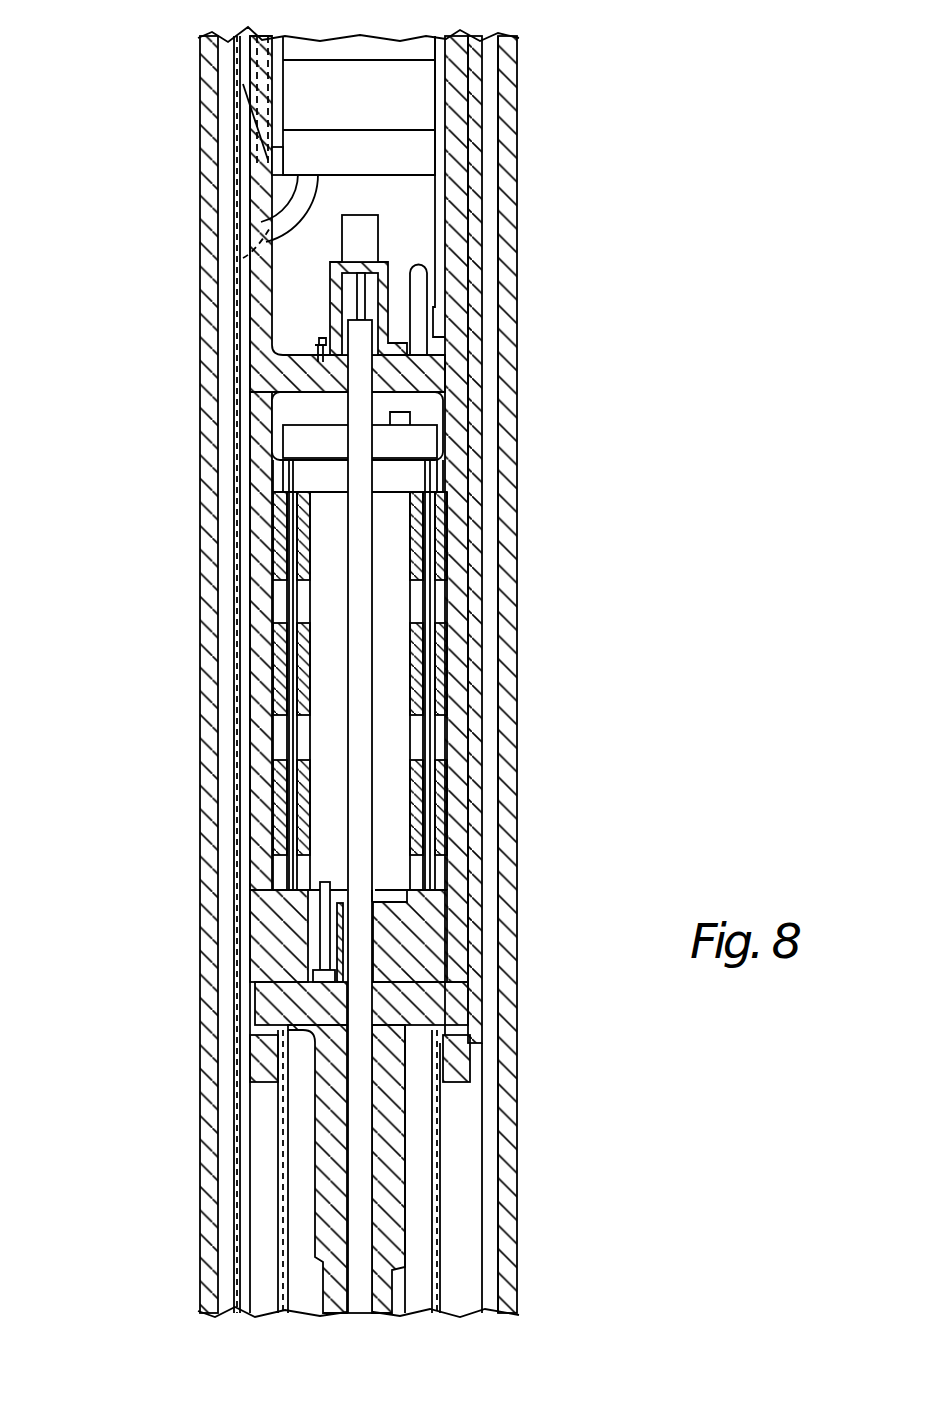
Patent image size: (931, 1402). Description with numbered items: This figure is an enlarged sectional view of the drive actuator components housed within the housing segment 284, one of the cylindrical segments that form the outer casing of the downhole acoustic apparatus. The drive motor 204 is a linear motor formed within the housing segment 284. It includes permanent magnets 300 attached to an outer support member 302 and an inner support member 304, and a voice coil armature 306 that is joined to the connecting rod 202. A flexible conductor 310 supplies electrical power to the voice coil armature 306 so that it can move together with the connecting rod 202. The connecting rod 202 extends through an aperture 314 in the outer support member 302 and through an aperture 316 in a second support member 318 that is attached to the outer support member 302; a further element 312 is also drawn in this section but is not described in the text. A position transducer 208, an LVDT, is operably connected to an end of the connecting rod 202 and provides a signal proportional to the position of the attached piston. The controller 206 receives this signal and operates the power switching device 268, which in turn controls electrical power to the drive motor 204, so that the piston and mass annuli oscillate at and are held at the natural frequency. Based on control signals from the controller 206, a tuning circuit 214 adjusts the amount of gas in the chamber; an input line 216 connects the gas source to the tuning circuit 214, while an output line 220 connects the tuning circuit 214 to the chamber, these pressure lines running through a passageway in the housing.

The connecting rod 202 is at (373, 743).
The drive motor 204 is at (450, 636).
The controller 206 is at (438, 67).
The position transducer 208 is at (378, 232).
The tuning circuit 214 is at (268, 165).
The input line 216 is at (240, 82).
The output line 220 is at (235, 191).
The power switching device 268 is at (436, 102).
The housing segment 284 is at (490, 503).
The permanent magnets 300 is at (455, 540).
The outer support member 302 is at (453, 900).
The inner support member 304 is at (388, 673).
The voice coil armature 306 is at (437, 466).
The flexible conductor 310 is at (432, 262).
The mandrel 312 is at (380, 1167).
The aperture 314 is at (378, 940).
The aperture 316 is at (375, 1050).
The second support member 318 is at (410, 1187).